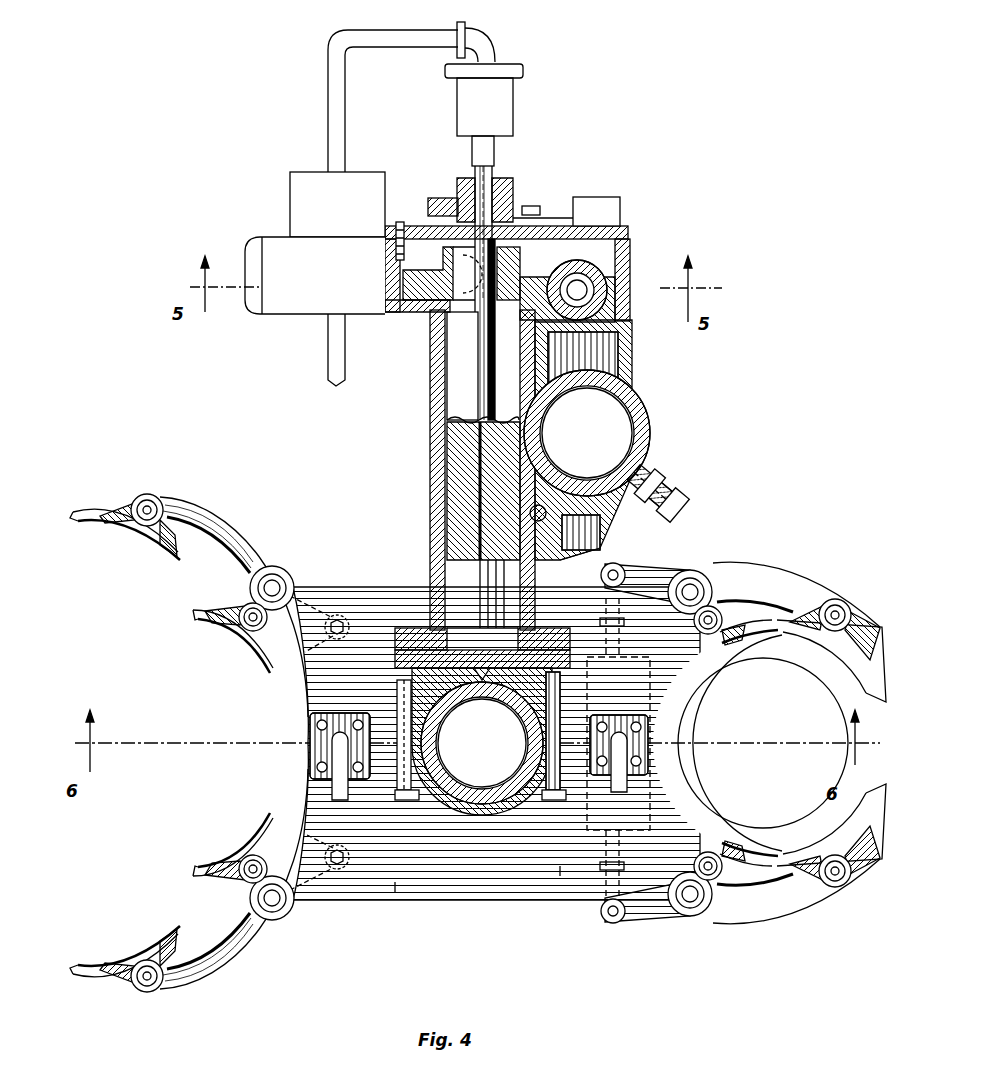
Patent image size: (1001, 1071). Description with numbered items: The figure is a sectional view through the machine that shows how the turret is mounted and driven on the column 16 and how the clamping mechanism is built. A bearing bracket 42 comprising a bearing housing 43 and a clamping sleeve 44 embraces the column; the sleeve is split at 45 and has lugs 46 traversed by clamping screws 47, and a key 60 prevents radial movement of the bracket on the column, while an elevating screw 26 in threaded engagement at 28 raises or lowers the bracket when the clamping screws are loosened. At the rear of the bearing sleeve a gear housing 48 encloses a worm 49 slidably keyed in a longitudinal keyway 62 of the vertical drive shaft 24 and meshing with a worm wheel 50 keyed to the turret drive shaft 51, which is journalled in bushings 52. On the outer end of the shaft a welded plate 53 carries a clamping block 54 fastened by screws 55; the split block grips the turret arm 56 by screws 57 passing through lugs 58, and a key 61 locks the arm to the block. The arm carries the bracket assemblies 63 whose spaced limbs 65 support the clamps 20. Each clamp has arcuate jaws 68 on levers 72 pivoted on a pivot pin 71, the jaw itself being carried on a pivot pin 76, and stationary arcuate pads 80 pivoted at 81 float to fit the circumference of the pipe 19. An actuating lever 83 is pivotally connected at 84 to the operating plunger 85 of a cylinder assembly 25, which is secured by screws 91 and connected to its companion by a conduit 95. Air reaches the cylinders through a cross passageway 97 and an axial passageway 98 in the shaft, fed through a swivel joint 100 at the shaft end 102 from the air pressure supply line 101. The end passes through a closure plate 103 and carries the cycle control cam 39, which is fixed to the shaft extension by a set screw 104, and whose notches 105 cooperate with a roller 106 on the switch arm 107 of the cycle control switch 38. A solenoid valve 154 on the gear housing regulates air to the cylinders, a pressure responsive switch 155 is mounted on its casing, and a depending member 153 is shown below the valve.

The column 16 is at (618, 425).
The pipe 19 is at (822, 670).
The clamp 20 is at (208, 514).
The vertical drive shaft 24 is at (603, 300).
The cylinder assembly 25 is at (308, 816).
The elevating screw 26 is at (540, 512).
The threaded engagement 28 is at (575, 556).
The cycle control switch 38 is at (622, 214).
The cycle control cam 39 is at (452, 200).
The bearing bracket 42 is at (625, 372).
The bearing housing 43 is at (432, 427).
The clamping sleeve 44 is at (650, 445).
The split 45 is at (655, 500).
The lug 46 is at (662, 470).
The clamping screw 47 is at (677, 452).
The gear housing 48 is at (632, 270).
The worm 49 is at (612, 258).
The worm wheel 50 is at (425, 278).
The turret drive shaft 51 is at (462, 375).
The bushing 52 is at (432, 347).
The plate 53 is at (398, 635).
The clamping block 54 is at (482, 898).
The screw 55 is at (415, 655).
The turret arm 56 is at (512, 792).
The screw 57 is at (408, 800).
The lug 58 is at (398, 800).
The key 60 is at (542, 440).
The key 61 is at (470, 743).
The longitudinal keyway 62 is at (580, 280).
The bracket assembly 63 is at (560, 866).
The limb 65 is at (395, 882).
The jaw 68 is at (83, 512).
The pivot pin 71 is at (275, 586).
The lever 72 is at (235, 530).
The pivot pin 76 is at (148, 506).
The arcuate pad 80 is at (245, 636).
The pivot 81 is at (248, 612).
The actuating lever 83 is at (325, 605).
The pivotal connection 84 is at (618, 572).
The operating plunger 85 is at (608, 653).
The screw 91 is at (320, 725).
The conduit 95 is at (335, 785).
The cross passageway 97 is at (480, 640).
The axial passageway 98 is at (480, 497).
The swivel joint 100 is at (470, 110).
The air pressure supply line 101 is at (412, 38).
The shaft end 102 is at (497, 214).
The closure plate 103 is at (428, 224).
The rod 104 is at (502, 190).
The notch 105 is at (532, 206).
The roller 106 is at (558, 212).
The switch arm 107 is at (578, 208).
The bar 153 is at (330, 353).
The solenoid valve 154 is at (258, 246).
The pressure responsive switch 155 is at (292, 193).